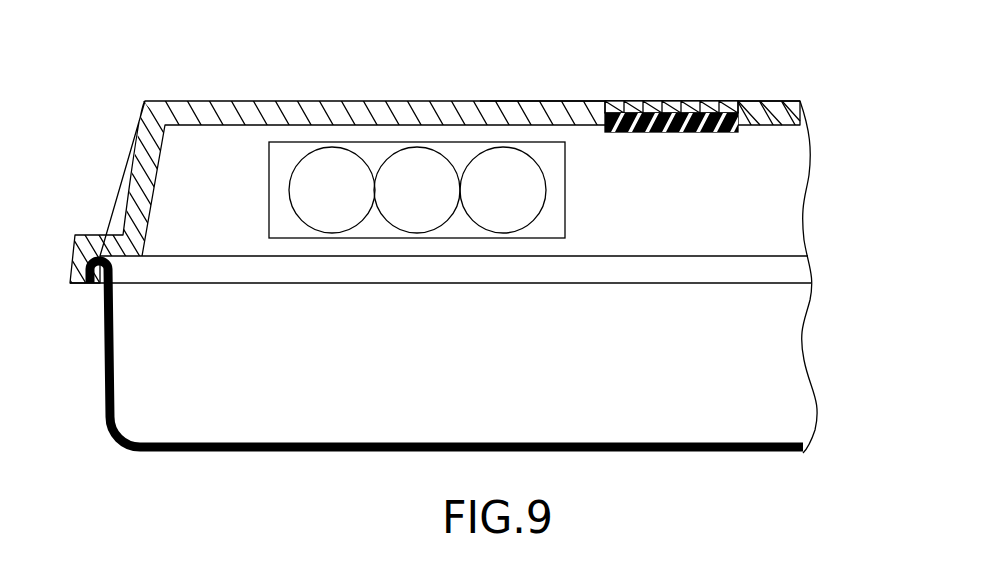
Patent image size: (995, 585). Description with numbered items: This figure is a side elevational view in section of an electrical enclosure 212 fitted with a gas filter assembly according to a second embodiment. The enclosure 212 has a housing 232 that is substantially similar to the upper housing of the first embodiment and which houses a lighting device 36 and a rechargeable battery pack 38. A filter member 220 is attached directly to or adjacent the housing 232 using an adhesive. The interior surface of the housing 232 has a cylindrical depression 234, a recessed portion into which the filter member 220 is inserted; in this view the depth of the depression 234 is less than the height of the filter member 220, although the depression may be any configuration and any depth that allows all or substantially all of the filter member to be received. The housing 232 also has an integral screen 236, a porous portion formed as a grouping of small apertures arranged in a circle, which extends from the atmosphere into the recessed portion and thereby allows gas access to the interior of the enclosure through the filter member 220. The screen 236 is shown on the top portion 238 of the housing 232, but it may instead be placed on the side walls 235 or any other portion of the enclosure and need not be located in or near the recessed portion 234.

The electrical enclosure 212 is at (126, 134).
The housing 232 is at (400, 101).
The top portion 238 is at (550, 101).
The screen 236 is at (675, 102).
The depression 234 is at (752, 108).
The filter member 220 is at (707, 143).
The side walls 235 is at (800, 176).
The rechargeable battery pack 38 is at (290, 140).
The lighting device 36 is at (532, 178).